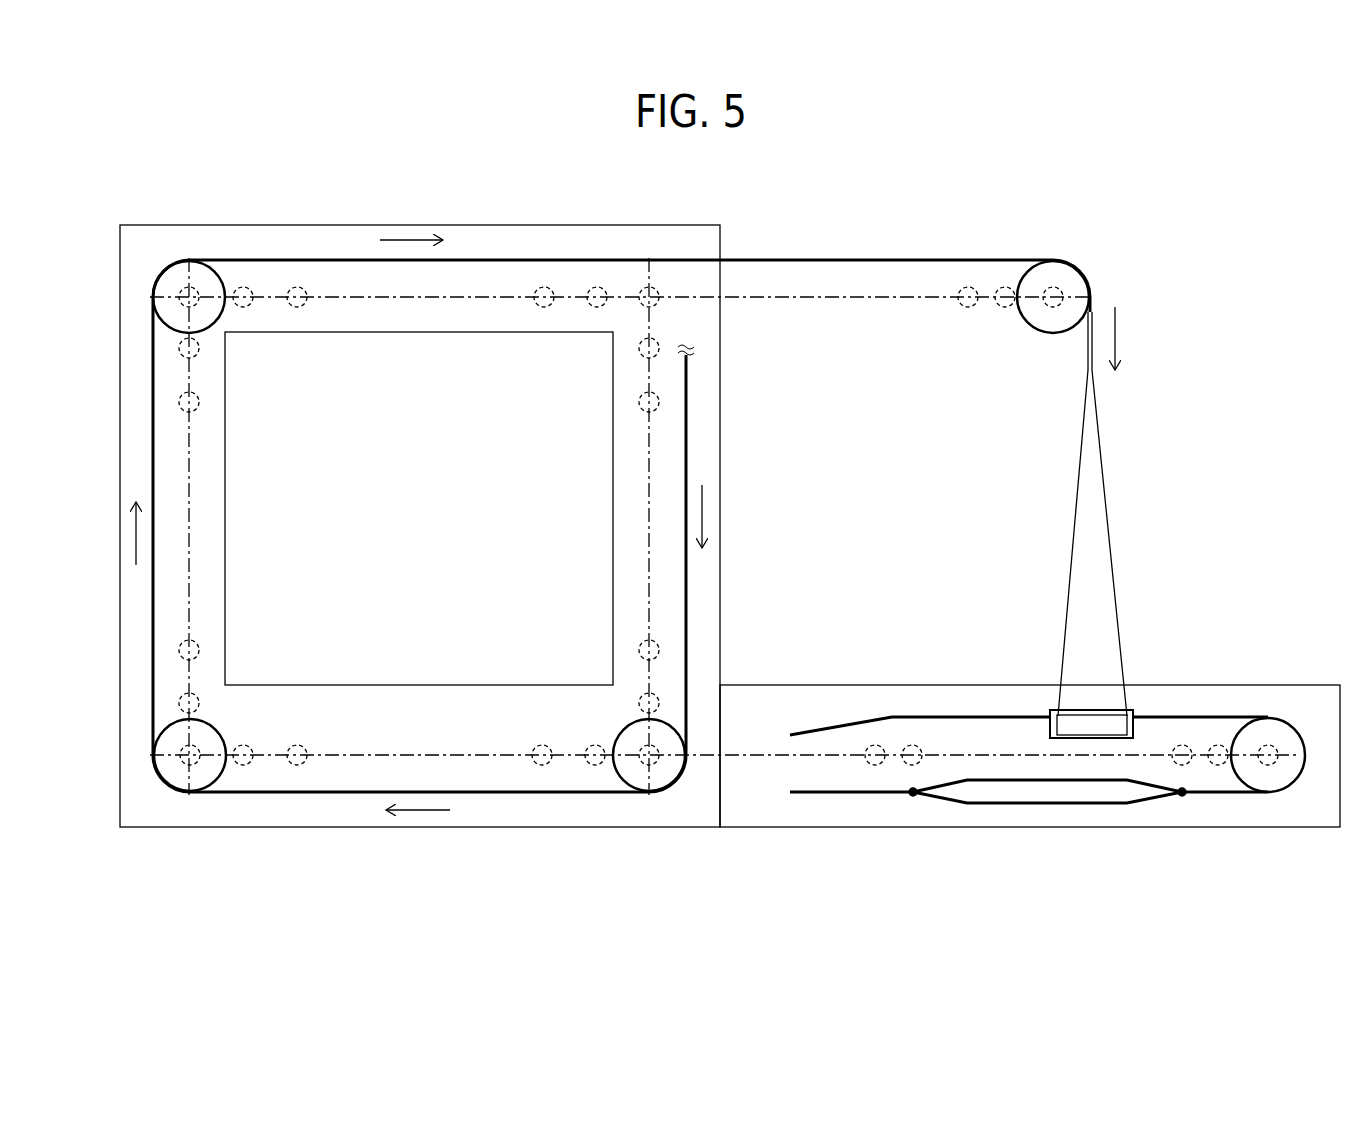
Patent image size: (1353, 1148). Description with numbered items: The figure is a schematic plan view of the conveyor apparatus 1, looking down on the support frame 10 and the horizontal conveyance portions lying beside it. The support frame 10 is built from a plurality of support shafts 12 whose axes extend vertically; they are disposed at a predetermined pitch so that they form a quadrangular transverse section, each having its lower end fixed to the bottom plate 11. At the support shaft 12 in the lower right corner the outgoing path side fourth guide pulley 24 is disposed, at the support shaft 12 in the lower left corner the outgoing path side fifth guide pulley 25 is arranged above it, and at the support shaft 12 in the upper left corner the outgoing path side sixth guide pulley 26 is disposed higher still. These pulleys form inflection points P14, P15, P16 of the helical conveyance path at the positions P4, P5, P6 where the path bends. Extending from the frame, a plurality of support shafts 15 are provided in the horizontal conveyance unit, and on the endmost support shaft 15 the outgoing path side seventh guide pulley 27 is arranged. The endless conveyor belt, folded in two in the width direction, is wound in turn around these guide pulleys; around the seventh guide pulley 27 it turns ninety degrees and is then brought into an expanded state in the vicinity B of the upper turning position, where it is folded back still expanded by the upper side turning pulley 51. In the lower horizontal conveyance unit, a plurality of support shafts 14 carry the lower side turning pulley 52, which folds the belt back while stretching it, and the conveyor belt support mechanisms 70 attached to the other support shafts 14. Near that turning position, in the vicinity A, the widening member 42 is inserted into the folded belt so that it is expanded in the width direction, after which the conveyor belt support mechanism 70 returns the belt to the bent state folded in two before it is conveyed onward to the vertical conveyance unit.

The conveyor apparatus 1 is at (848, 215).
The support frame 10 is at (476, 288).
The bottom plate 11 is at (355, 828).
The support shaft 12 is at (296, 286).
The support shaft 14 is at (912, 766).
The support shaft 15 is at (1053, 286).
The outgoing path side fourth guide pulley 24 is at (665, 775).
The outgoing path side fifth guide pulley 25 is at (180, 785).
The outgoing path side sixth guide pulley 26 is at (178, 275).
The outgoing path side seventh guide pulley 27 is at (1090, 278).
The widening member 42 is at (1005, 786).
The upper side turning pulley 51 is at (1085, 725).
The lower side turning pulley 52 is at (1270, 733).
The conveyor belt support mechanism 70 is at (913, 798).
The vicinity of the turning position A is at (1085, 806).
The vicinity of the turning position B is at (1102, 572).
The position P4 is at (660, 762).
The position P5 is at (185, 755).
The position P6 is at (185, 297).
The inflection point P14 is at (680, 782).
The inflection point P15 is at (162, 780).
The inflection point P16 is at (165, 272).